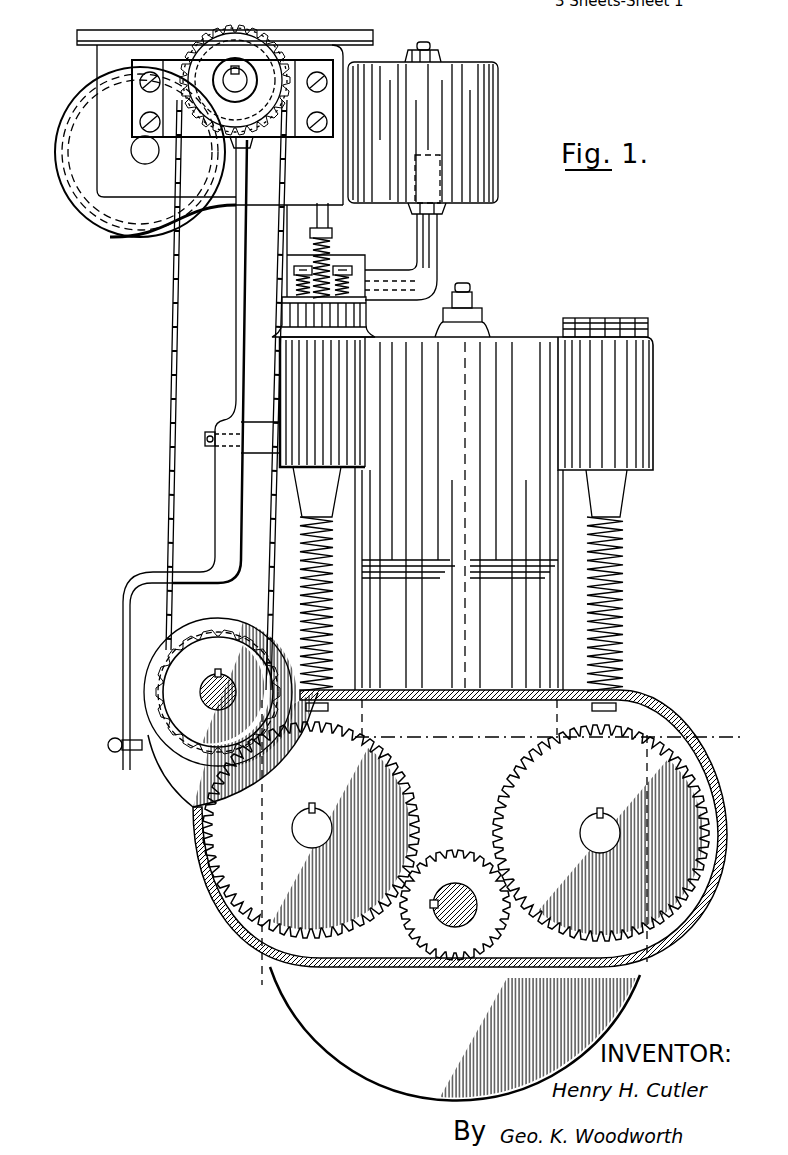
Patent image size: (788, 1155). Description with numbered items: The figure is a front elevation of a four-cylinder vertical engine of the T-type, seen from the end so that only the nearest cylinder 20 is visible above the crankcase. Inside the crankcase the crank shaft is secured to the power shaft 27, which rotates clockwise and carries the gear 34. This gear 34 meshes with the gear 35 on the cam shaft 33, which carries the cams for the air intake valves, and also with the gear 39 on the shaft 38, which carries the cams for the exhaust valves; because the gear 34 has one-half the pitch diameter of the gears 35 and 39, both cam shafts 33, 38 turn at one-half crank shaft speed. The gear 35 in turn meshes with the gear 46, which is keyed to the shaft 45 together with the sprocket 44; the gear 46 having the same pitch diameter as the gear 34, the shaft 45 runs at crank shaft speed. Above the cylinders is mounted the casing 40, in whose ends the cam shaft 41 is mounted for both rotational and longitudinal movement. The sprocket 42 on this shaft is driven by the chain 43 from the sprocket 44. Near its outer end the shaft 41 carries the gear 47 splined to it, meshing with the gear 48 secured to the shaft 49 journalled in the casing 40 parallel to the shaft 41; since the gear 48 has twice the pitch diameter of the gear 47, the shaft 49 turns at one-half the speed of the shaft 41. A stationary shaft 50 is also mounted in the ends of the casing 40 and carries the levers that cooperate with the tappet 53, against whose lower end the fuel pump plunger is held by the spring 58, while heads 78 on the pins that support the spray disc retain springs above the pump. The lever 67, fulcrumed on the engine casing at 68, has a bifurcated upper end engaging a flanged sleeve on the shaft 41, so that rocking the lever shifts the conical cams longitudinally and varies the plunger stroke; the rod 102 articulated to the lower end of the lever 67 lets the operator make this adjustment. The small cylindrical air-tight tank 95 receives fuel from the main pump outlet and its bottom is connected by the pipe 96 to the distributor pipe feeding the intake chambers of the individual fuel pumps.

The cylinder 20 is at (497, 348).
The power shaft 27 is at (437, 918).
The cam shaft 33 is at (316, 818).
The gear 34 is at (436, 862).
The gear 35 is at (410, 779).
The shaft 38 is at (588, 818).
The gear 39 is at (527, 797).
The casing 40 is at (110, 168).
The cam shaft 41 is at (200, 62).
The sprocket 42 is at (228, 48).
The chain 43 is at (165, 402).
The sprocket 44 is at (218, 640).
The shaft 45 is at (213, 705).
The gear 46 is at (190, 782).
The gear 47 is at (250, 140).
The gear 48 is at (128, 208).
The shaft 49 is at (140, 157).
The stationary shaft 50 is at (236, 430).
The tappet 53 is at (330, 219).
The spring 58 is at (330, 268).
The lever 67 is at (235, 331).
The fulcrum 68 is at (208, 447).
The heads 78 is at (303, 266).
The air-tight tank 95 is at (462, 110).
The pipe 96 is at (438, 237).
The rod 102 is at (108, 745).